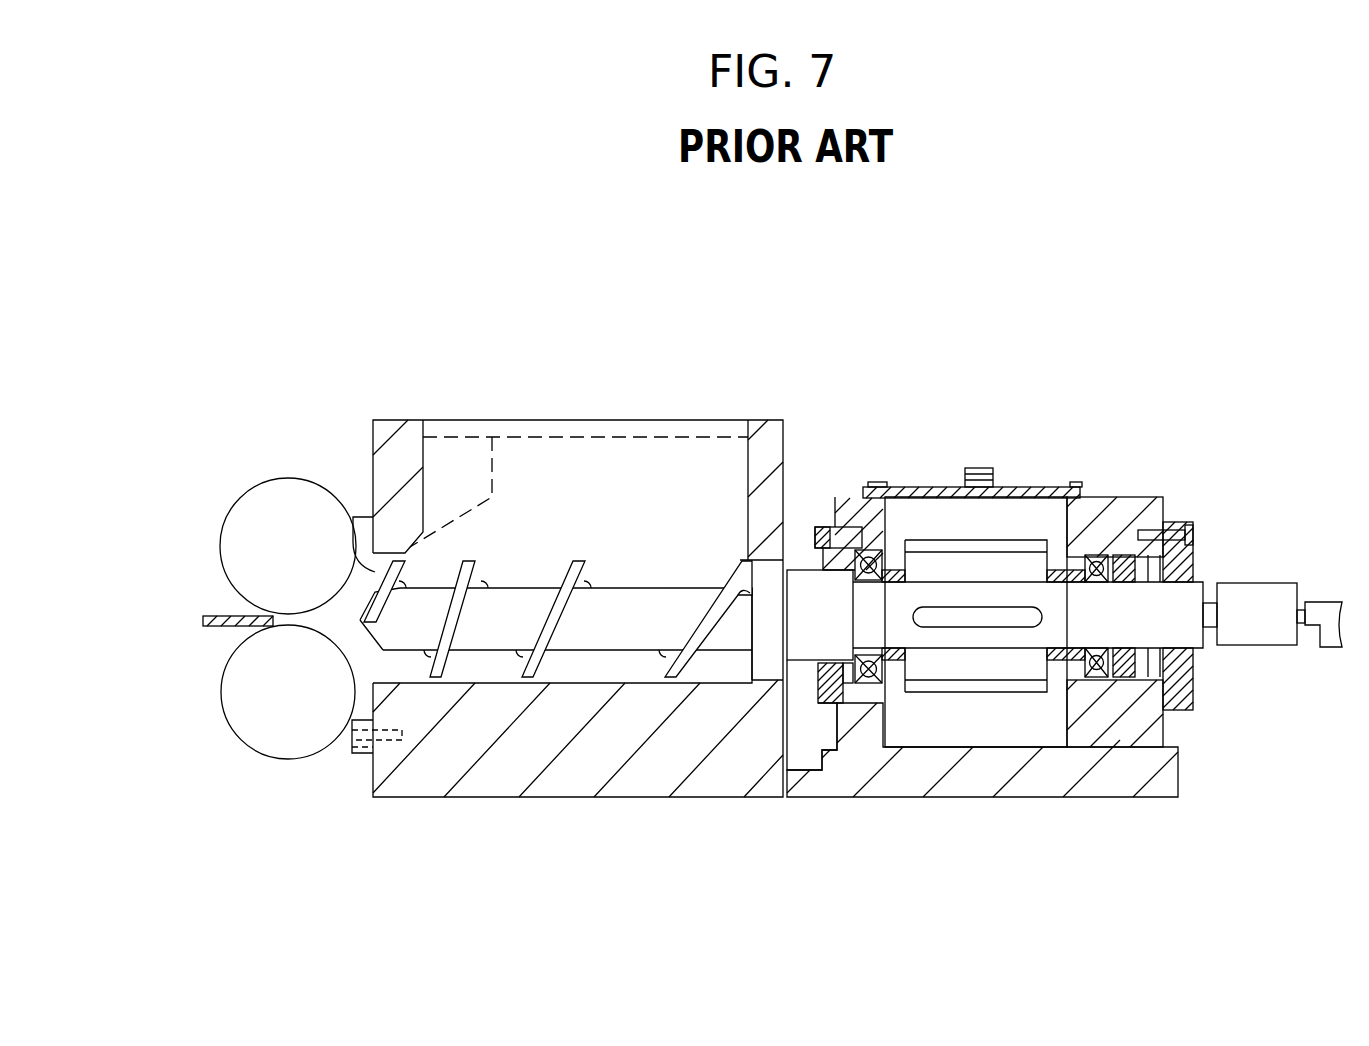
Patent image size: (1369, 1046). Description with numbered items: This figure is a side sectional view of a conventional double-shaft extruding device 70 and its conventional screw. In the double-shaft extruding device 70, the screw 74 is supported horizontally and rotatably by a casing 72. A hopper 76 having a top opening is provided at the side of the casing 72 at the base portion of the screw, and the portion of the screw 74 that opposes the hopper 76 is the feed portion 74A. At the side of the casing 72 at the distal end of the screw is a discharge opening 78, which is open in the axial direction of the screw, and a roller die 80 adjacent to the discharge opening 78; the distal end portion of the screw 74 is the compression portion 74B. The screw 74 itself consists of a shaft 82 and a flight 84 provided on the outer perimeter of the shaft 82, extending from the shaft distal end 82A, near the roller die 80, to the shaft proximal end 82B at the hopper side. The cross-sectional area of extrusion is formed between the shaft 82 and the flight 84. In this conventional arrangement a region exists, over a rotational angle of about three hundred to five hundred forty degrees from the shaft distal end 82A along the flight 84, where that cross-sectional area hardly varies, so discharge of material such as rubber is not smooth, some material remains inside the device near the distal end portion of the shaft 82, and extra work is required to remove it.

The double-shaft extruding device 70 is at (848, 332).
The casing 72 is at (698, 412).
The screw 74 is at (457, 613).
The feed portion 74A is at (618, 612).
The compression portion 74B is at (427, 610).
The hopper 76 is at (575, 428).
The discharge opening 78 is at (376, 568).
The roller die 80 is at (283, 478).
The shaft 82 is at (457, 613).
The shaft distal end 82A is at (362, 620).
The shaft proximal end 82B is at (712, 587).
The flight 84 is at (554, 650).